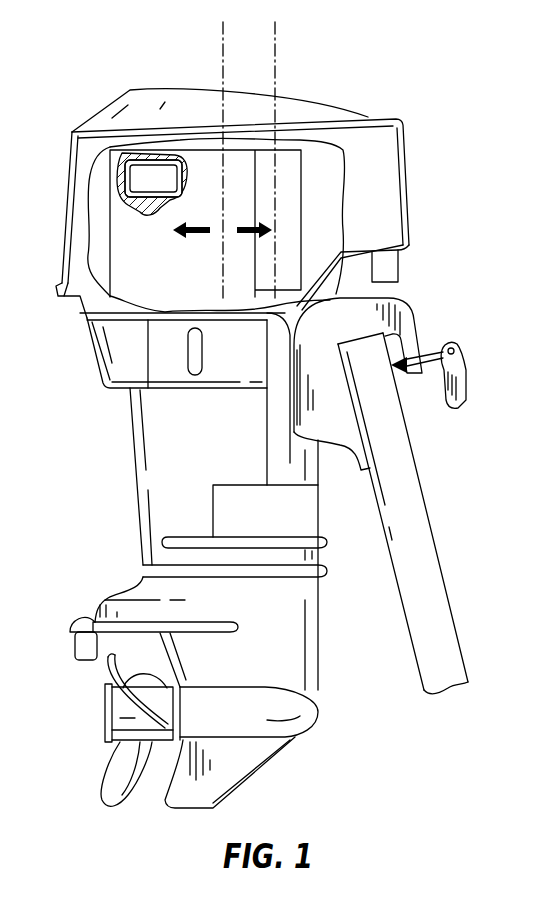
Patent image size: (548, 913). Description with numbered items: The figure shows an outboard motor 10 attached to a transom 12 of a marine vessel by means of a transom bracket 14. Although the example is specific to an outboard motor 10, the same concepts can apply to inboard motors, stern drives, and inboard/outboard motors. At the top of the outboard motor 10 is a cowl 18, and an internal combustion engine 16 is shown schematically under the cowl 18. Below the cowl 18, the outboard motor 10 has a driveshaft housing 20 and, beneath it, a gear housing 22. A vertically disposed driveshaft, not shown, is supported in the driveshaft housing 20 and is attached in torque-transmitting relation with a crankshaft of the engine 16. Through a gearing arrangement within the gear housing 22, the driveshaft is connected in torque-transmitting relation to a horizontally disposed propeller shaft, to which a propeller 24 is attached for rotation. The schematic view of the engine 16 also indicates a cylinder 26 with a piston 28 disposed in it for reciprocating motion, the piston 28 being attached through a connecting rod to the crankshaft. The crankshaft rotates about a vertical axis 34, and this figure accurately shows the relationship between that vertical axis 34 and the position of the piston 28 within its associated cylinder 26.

The outboard motor 10 is at (380, 60).
The transom 12 is at (418, 558).
The transom bracket 14 is at (406, 305).
The internal combustion engine 16 is at (133, 253).
The cowl 18 is at (117, 115).
The driveshaft housing 20 is at (167, 466).
The gear housing 22 is at (267, 715).
The propeller 24 is at (135, 720).
The cylinder 26 is at (117, 172).
The piston 28 is at (149, 175).
The axis 34 is at (221, 58).